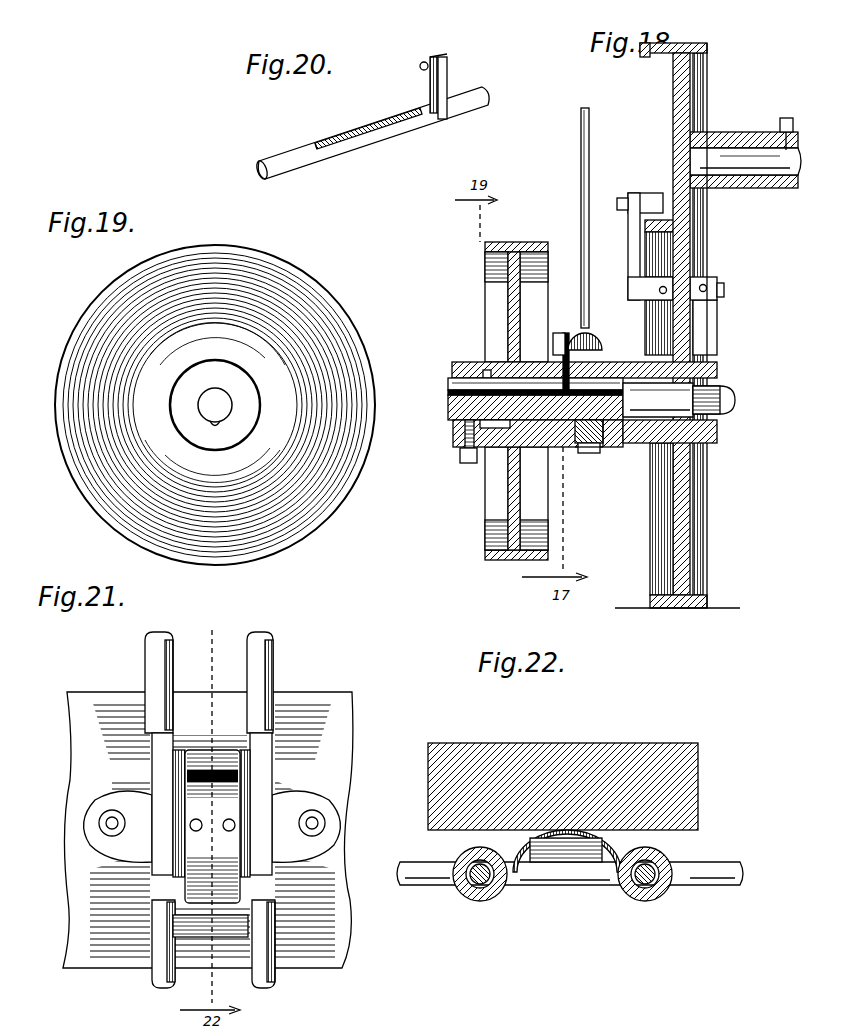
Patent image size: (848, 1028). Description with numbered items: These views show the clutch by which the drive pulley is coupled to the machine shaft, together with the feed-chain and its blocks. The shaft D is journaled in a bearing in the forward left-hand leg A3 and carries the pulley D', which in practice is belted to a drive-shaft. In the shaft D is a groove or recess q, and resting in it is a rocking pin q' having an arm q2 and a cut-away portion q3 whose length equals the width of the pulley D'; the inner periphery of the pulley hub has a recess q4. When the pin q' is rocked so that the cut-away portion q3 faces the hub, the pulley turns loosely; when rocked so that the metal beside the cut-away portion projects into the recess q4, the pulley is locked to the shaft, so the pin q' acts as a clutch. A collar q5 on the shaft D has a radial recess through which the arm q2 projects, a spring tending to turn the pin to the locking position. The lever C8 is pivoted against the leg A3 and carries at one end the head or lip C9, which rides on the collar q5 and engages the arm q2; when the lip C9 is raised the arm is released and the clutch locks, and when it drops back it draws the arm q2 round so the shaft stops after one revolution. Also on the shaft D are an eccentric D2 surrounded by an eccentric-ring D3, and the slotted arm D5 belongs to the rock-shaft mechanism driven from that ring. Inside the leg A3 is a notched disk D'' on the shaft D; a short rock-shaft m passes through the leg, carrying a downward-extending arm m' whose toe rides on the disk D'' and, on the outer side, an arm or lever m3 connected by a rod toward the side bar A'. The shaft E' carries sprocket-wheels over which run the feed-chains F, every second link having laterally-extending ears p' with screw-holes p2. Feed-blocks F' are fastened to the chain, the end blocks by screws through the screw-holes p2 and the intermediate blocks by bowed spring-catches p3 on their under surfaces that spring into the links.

In FIG. 18, the side bar A' is at (665, 319).
In FIG. 18, the forward left-hand leg A3 is at (690, 515).
In FIG. 18, the shaft E' is at (745, 139).
In FIG. 18, the arm D5 is at (590, 175).
In FIG. 18, the pulley D' is at (488, 401).
In FIG. 19, the pulley D' is at (215, 405).
In FIG. 18, the arm or lever m3 is at (634, 245).
In FIG. 18, the short rock-shaft m is at (694, 283).
In FIG. 18, the downward-extending arm m' is at (710, 327).
In FIG. 18, the head or lip C9 is at (556, 352).
In FIG. 18, the lever C8 is at (585, 335).
In FIG. 18, the rocking pin q' is at (523, 352).
In FIG. 20, the rocking pin q' is at (370, 133).
In FIG. 18, the cut-away portion q3 is at (497, 380).
In FIG. 20, the cut-away portion q3 is at (360, 136).
In FIG. 18, the arm q2 is at (572, 350).
In FIG. 20, the arm q2 is at (447, 60).
In FIG. 18, the groove or recess q is at (516, 387).
In FIG. 18, the shaft D is at (562, 412).
In FIG. 18, the recess q4 is at (500, 453).
In FIG. 19, the recess q4 is at (220, 425).
In FIG. 18, the collar q5 is at (580, 445).
In FIG. 18, the eccentric D2 is at (605, 445).
In FIG. 18, the eccentric-ring D3 is at (590, 455).
In FIG. 18, the disk D'' is at (692, 420).
In FIG. 21, the feed-chain F is at (210, 810).
In FIG. 22, the feed-chain F is at (570, 897).
In FIG. 21, the feed-block F' is at (208, 808).
In FIG. 22, the feed-block F' is at (563, 770).
In FIG. 21, the ear p' is at (212, 810).
In FIG. 21, the screw-hole p2 is at (106, 828).
In FIG. 21, the bowed spring-catch p3 is at (215, 852).
In FIG. 22, the bowed spring-catch p3 is at (528, 852).